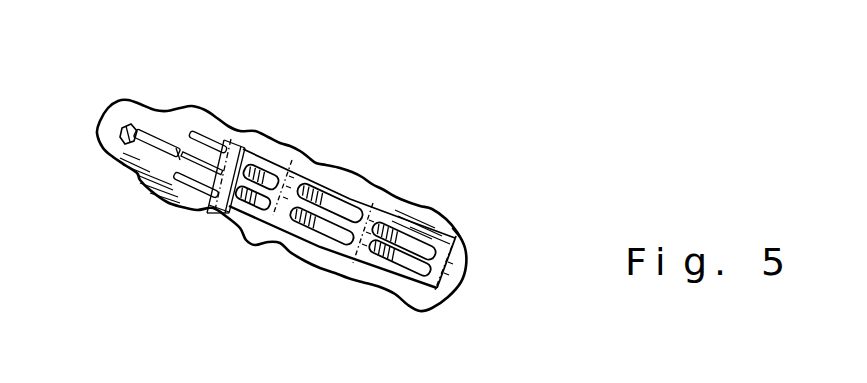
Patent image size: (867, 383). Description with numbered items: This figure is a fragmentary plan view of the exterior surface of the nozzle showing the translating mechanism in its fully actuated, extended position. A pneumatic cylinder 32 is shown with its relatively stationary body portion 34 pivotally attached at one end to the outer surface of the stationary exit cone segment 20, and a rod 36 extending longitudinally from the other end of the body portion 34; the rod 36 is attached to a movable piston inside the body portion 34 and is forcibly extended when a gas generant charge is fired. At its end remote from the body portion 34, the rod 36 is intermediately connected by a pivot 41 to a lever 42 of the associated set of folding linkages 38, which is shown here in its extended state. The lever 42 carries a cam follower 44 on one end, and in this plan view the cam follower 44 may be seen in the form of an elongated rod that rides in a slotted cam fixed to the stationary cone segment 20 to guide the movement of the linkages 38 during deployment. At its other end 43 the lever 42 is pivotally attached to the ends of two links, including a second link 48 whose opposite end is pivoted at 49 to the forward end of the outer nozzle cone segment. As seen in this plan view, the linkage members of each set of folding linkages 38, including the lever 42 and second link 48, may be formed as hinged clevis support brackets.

The stationary exit cone segment 20 is at (252, 148).
The pneumatic cylinder 32 is at (167, 147).
The body portion 34 is at (147, 135).
The rod 36 is at (233, 143).
The set of folding linkages 38 is at (329, 149).
The pivot 41 is at (180, 210).
The lever 42 is at (308, 177).
The other end of lever 43 is at (373, 205).
The cam follower 44 is at (218, 207).
The second link 48 is at (405, 255).
The pivot 49 is at (293, 172).